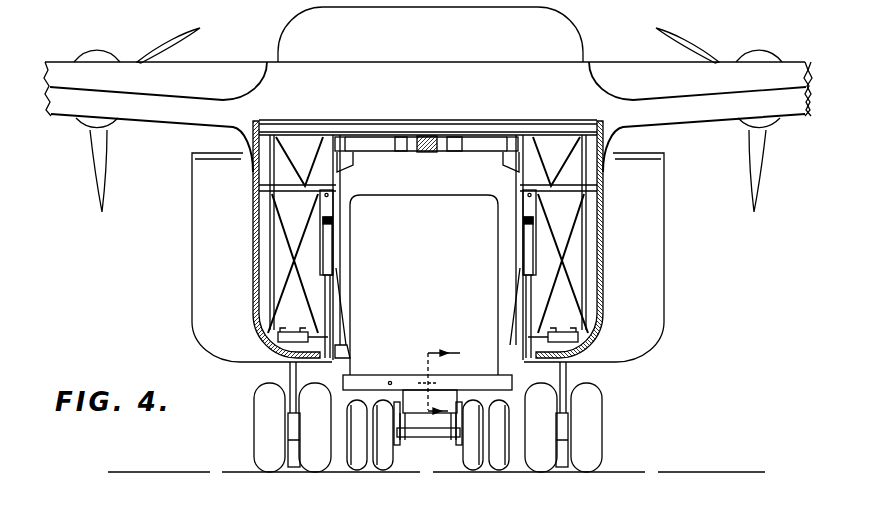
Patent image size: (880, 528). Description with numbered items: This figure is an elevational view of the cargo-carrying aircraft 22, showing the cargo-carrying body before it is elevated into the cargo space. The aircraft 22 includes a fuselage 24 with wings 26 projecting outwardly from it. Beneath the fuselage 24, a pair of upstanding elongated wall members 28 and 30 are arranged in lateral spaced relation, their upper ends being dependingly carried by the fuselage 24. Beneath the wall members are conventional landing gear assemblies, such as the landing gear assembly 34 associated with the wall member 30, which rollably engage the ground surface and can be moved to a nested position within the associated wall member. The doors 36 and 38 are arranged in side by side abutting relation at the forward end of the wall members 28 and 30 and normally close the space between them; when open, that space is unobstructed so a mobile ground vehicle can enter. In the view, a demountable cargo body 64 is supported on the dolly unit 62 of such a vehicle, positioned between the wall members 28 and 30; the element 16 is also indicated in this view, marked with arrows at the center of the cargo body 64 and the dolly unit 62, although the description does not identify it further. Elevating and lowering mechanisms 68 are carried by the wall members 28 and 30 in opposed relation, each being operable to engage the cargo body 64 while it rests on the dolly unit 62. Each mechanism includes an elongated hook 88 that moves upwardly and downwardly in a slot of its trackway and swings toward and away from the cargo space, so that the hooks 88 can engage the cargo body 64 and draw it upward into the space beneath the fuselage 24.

The cargo landing gear unit 16 is at (435, 382).
The cargo-carrying aircraft 22 is at (607, 58).
The fuselage 24 is at (533, 73).
The wings 26 is at (108, 65).
The wall member 28 is at (251, 272).
The wall member 30 is at (604, 257).
The landing gear assembly 34 is at (598, 440).
The door 36 is at (195, 328).
The door 38 is at (663, 307).
The dolly unit 62 is at (442, 443).
The demountable cargo body 64 is at (486, 320).
The elevating and lowering mechanism 68 is at (338, 256).
The elongated hook 88 is at (359, 369).